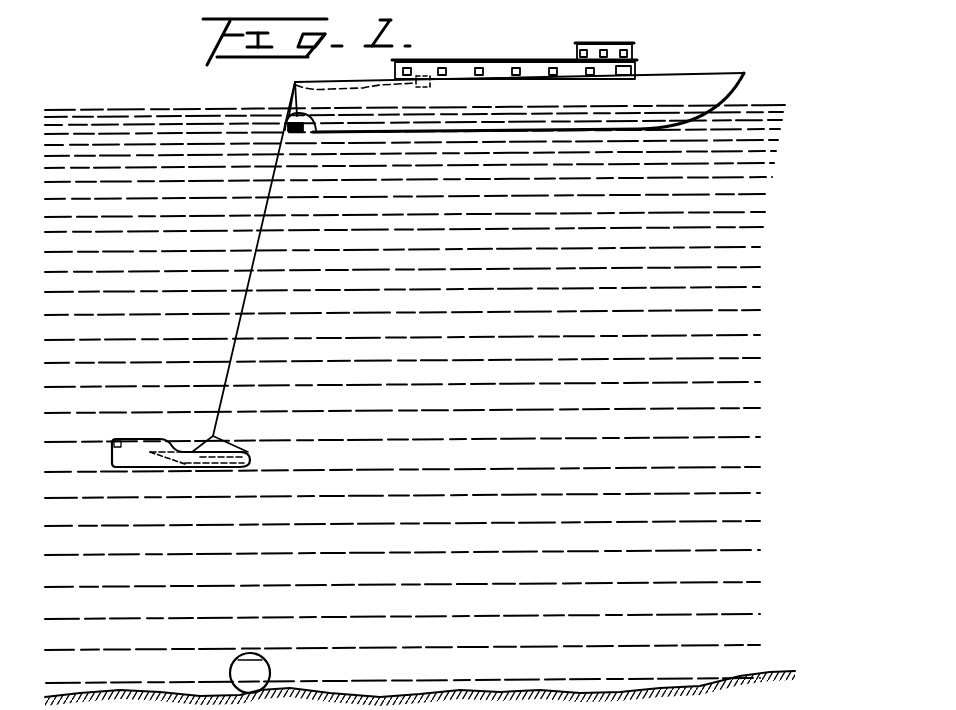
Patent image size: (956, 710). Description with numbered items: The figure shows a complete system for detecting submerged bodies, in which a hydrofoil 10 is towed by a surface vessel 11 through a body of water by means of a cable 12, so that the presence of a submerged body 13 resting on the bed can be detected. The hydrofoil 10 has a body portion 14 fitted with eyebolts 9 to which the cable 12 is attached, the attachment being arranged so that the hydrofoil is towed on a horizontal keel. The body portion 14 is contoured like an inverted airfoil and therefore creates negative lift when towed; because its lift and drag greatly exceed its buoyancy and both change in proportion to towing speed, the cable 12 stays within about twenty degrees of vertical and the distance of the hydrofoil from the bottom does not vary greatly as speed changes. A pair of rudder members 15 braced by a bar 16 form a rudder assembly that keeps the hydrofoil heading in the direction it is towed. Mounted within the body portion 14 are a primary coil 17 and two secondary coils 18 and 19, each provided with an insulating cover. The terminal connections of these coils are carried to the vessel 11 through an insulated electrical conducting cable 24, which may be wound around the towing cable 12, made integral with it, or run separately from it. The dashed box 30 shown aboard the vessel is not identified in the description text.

The eyebolts 9 is at (192, 451).
The hydrofoil 10 is at (258, 460).
The vessel 11 is at (693, 79).
The cable 12 is at (259, 247).
The submerged body 13 is at (271, 670).
The body portion 14 is at (162, 463).
The rudder members 15 is at (126, 458).
The bar 16 is at (112, 444).
The primary coil 17 is at (188, 468).
The secondary coil 18 is at (245, 468).
The secondary coil 19 is at (223, 461).
The insulated electrical conducting cable 24 is at (370, 85).
The recorder 30 is at (431, 86).